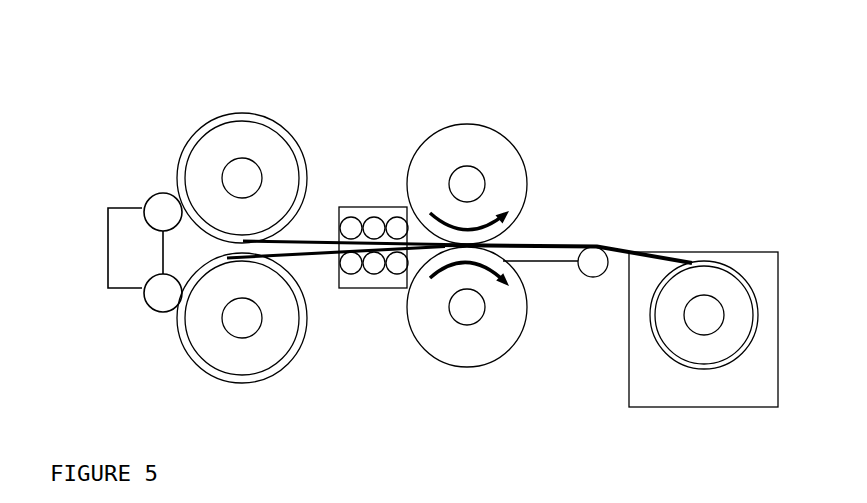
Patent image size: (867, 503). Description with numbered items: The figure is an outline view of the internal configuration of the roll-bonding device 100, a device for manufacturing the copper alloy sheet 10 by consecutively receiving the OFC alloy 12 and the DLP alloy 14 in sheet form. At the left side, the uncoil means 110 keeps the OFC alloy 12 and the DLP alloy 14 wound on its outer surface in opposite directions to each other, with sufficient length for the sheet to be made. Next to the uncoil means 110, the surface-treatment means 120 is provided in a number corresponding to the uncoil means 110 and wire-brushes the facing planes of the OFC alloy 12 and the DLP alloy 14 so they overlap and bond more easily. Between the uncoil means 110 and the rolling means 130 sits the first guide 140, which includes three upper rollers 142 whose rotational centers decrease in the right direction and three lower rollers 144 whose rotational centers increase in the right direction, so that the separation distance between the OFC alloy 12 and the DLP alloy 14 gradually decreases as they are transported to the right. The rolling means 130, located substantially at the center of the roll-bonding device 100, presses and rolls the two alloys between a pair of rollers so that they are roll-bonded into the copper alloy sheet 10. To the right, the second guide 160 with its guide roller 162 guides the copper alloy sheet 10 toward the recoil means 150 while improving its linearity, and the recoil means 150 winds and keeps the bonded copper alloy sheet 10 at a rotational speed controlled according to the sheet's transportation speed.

The roll-bonding device 100 is at (553, 66).
The uncoil means 110 is at (287, 106).
The surface-treatment means 120 is at (117, 195).
The OFC alloy 12 is at (312, 237).
The DLP alloy 14 is at (313, 257).
The first guide 140 is at (386, 302).
The upper rollers 142 is at (372, 216).
The lower rollers 144 is at (352, 276).
The rolling means 130 is at (538, 141).
The copper alloy sheet 10 is at (560, 243).
The second guide 160 is at (582, 290).
The guide roller 162 is at (606, 250).
The recoil means 150 is at (764, 236).